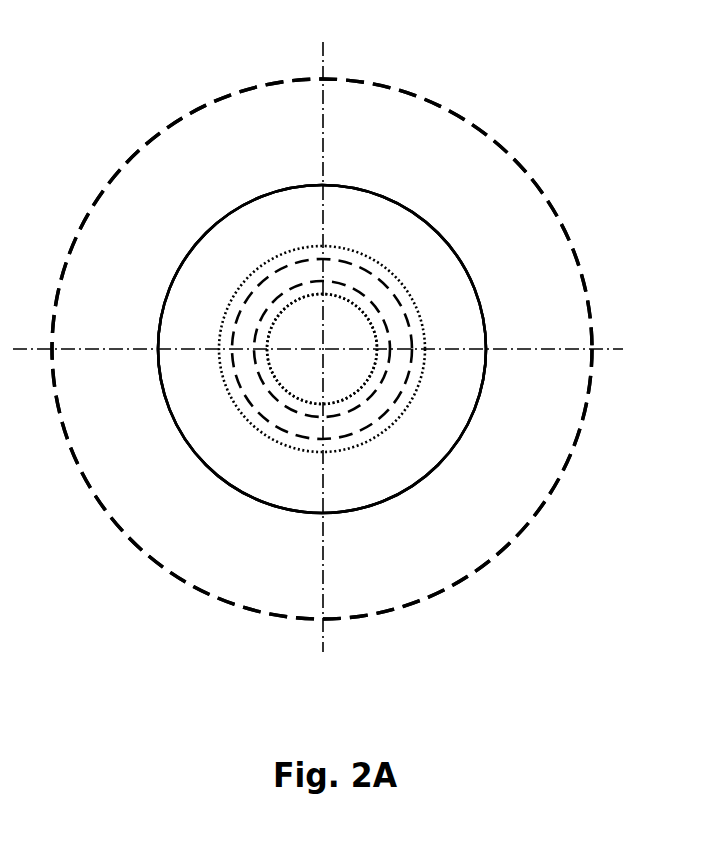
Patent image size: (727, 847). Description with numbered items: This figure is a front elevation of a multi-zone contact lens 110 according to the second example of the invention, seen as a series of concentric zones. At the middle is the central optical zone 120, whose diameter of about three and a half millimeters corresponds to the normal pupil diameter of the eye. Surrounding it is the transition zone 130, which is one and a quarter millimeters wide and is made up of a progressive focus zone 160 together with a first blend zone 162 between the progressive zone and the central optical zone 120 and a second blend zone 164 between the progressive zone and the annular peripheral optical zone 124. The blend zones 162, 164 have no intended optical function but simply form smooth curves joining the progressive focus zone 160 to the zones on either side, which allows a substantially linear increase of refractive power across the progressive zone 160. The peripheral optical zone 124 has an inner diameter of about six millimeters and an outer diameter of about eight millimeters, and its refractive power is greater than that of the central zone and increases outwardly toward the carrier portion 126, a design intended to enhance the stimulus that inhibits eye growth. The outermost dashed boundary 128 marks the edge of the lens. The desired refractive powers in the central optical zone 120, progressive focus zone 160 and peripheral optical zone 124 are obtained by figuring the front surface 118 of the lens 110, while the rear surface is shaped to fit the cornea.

The lens 110 is at (520, 72).
The front surface 118 is at (532, 267).
The central optical zone 120 is at (352, 325).
The peripheral optical zone 124 is at (453, 278).
The carrier portion 126 is at (518, 472).
The outer edge 128 is at (475, 573).
The transition zone 130 is at (343, 400).
The progressive focus zone 160 is at (287, 412).
The first blend zone 162 is at (232, 388).
The second blend zone 164 is at (265, 337).